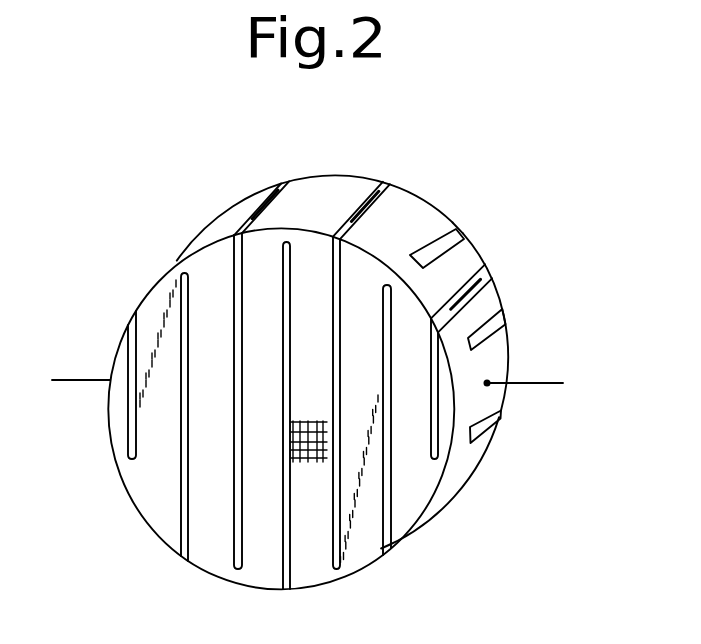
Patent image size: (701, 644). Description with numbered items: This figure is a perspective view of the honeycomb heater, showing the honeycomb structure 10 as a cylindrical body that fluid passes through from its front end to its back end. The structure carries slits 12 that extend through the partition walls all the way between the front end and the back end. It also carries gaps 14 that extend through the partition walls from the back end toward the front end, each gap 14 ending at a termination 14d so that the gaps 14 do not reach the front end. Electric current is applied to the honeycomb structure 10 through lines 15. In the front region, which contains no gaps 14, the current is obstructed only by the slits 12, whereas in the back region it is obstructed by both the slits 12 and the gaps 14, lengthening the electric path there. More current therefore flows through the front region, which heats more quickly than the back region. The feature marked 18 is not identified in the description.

The honeycomb structure 10 is at (212, 216).
The slits 12 is at (385, 558).
The gaps 14 is at (448, 222).
The termination 14d is at (503, 342).
The lines 15 is at (77, 380).
The grooves 18 is at (267, 418).